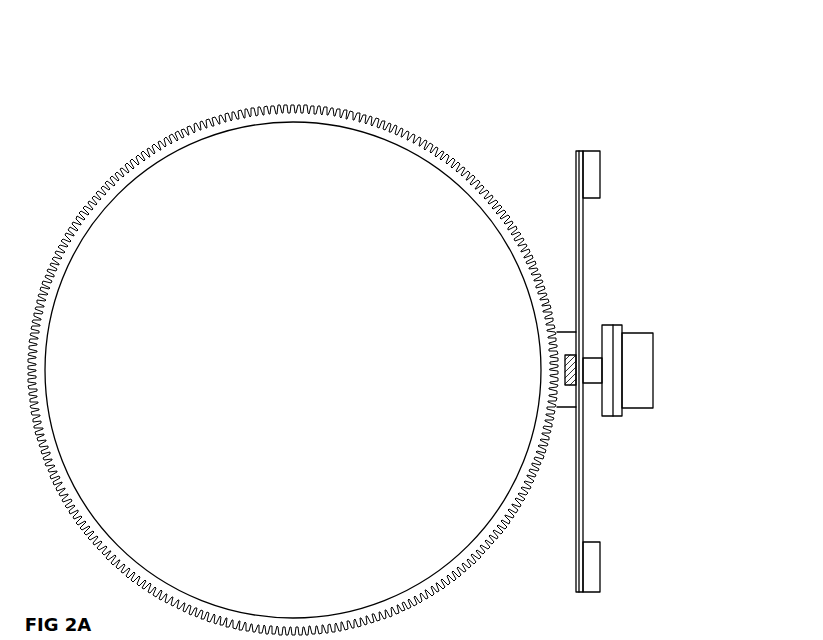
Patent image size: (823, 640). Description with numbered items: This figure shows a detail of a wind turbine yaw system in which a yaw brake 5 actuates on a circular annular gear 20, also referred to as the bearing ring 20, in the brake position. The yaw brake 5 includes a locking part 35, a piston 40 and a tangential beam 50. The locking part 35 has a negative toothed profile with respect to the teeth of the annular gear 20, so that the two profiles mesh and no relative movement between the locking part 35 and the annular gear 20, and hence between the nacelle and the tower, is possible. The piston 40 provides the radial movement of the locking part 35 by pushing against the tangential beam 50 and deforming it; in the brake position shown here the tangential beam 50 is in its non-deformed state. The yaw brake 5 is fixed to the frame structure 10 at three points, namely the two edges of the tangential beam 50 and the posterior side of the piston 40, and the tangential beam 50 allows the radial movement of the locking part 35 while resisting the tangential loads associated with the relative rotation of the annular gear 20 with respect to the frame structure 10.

The yaw brake 5 is at (642, 293).
The frame structure 10 is at (588, 150).
The annular gear 20 is at (447, 158).
The locking part 35 is at (583, 440).
The piston 40 is at (614, 366).
The tangential beam 50 is at (578, 230).